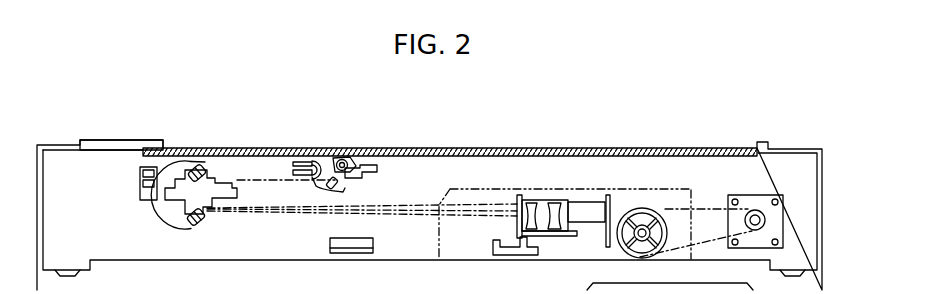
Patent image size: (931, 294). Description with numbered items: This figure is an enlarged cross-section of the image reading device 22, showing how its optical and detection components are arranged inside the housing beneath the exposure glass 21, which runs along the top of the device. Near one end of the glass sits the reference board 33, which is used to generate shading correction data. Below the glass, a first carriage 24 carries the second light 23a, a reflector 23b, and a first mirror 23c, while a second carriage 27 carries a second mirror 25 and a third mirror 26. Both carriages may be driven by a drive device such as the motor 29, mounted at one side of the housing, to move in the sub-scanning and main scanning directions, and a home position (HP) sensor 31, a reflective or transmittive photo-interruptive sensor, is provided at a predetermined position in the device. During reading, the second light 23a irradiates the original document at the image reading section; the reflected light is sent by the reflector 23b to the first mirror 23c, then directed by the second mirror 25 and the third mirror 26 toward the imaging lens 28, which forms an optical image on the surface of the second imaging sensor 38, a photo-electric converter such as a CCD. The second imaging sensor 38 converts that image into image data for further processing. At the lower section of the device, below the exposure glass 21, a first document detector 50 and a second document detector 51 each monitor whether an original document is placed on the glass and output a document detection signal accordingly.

The exposure glass 21 is at (484, 148).
The image reading device 22 is at (135, 262).
The second light 23a is at (348, 160).
The reflector 23b is at (318, 160).
The first mirror 23c is at (342, 189).
The first carriage 24 is at (373, 170).
The second mirror 25 is at (217, 170).
The third mirror 26 is at (211, 228).
The second carriage 27 is at (178, 230).
The imaging lens 28 is at (533, 195).
The motor 29 is at (762, 195).
The home position (HP) sensor 31 is at (148, 202).
The reference board 33 is at (121, 143).
The second imaging sensor 38 is at (612, 196).
The first document detector 50 is at (355, 253).
The second document detector 51 is at (518, 256).